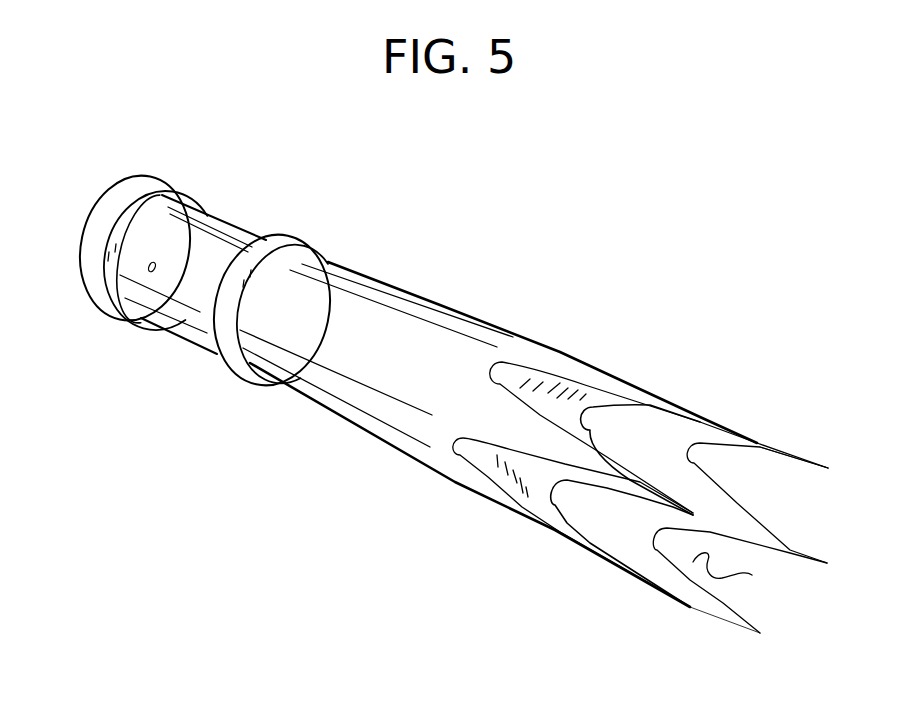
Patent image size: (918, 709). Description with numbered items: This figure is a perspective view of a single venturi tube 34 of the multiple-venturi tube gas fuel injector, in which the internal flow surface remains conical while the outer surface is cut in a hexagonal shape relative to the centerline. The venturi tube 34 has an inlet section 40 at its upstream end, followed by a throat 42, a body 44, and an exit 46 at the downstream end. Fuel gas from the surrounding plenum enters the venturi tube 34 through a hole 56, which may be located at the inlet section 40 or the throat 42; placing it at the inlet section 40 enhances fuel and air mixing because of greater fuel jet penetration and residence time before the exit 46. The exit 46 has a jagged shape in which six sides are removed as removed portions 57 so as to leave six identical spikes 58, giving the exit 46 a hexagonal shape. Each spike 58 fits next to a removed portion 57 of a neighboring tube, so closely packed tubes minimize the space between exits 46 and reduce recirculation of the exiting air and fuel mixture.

The venturi tube 34 is at (499, 208).
The inlet section 40 is at (150, 186).
The throat 42 is at (244, 228).
The body 44 is at (516, 334).
The exit 46 is at (748, 478).
The hole 56 is at (148, 267).
The removed portion 57 is at (752, 575).
The spike 58 is at (710, 613).